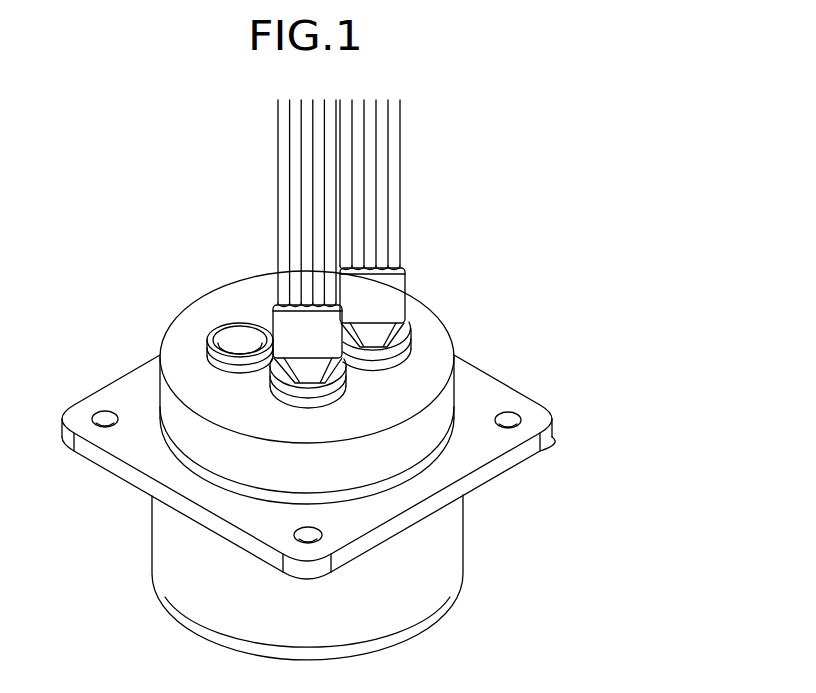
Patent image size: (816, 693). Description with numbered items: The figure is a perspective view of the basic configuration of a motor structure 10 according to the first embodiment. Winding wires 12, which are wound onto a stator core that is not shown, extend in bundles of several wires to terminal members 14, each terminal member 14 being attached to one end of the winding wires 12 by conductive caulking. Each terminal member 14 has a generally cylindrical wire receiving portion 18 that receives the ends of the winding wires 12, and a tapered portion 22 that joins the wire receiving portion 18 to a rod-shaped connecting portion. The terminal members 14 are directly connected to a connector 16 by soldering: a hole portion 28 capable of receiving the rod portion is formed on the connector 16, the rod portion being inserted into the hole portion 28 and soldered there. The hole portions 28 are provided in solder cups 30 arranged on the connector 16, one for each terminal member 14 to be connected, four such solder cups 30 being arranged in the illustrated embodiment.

The motor structure 10 is at (113, 575).
The winding wire 12 is at (279, 184).
The terminal member 14 is at (353, 319).
The connector 16 is at (177, 345).
The wire receiving portion 18 is at (384, 306).
The tapered portion 22 is at (384, 345).
The hole portion 28 is at (240, 342).
The solder cup 30 is at (232, 368).